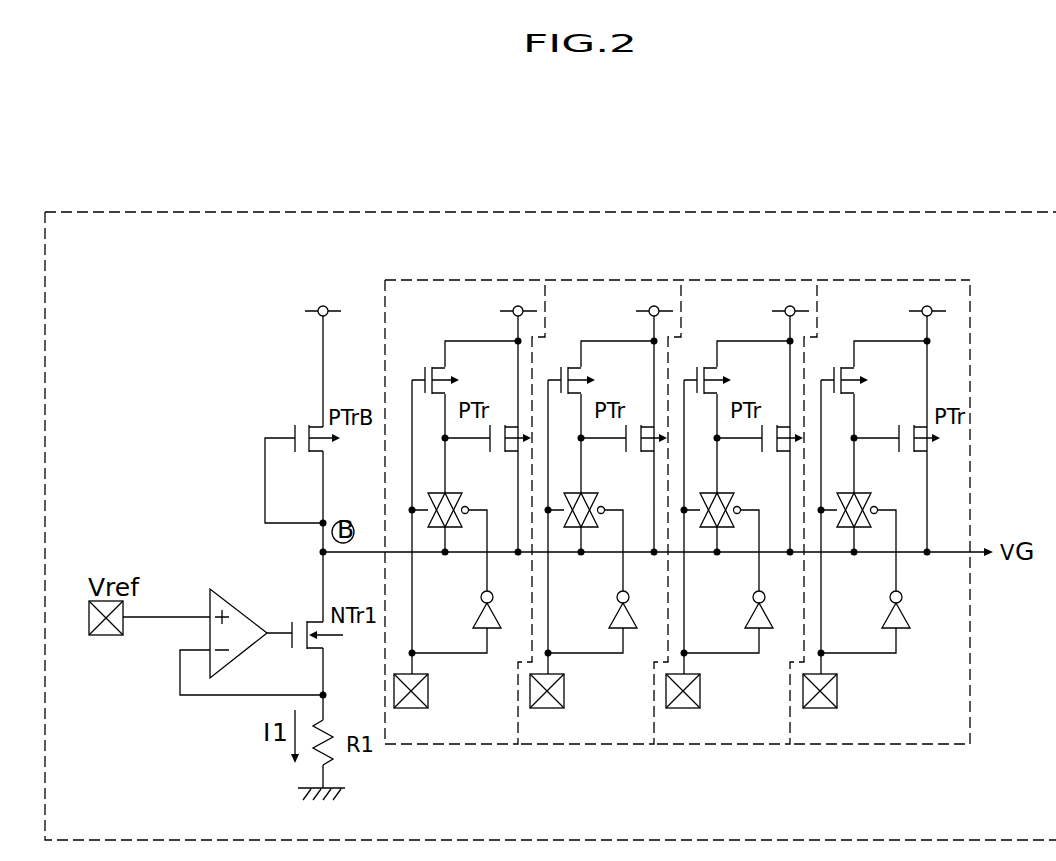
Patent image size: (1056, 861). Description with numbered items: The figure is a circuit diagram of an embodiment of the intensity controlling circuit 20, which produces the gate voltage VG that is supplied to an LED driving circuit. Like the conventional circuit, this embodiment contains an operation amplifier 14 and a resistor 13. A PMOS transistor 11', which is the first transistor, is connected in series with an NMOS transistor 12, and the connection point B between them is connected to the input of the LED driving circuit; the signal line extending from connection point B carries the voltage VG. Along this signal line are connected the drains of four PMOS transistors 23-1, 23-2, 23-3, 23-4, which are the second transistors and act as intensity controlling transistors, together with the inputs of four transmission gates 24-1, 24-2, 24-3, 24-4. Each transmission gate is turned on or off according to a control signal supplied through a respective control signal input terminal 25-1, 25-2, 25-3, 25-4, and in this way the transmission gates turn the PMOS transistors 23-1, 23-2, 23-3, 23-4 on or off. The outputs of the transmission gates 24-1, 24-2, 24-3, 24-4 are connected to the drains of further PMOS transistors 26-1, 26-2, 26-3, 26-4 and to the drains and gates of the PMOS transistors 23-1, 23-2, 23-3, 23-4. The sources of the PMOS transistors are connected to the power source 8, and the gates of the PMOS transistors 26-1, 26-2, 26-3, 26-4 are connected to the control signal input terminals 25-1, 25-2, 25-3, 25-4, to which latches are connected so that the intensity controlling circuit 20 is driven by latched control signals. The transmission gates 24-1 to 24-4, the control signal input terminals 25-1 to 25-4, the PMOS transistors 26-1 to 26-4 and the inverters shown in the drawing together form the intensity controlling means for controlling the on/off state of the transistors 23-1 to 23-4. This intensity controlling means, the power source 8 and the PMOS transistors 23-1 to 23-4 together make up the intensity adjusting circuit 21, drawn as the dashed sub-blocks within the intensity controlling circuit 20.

The intensity controlling circuit 20 is at (252, 213).
The intensity adjusting circuit 21 is at (892, 278).
The power source 8 is at (317, 307).
The PMOS transistor 11' is at (301, 404).
The NMOS transistor 12 is at (325, 647).
The resistor 13 is at (317, 764).
The operation amplifier 14 is at (210, 590).
The PMOS transistor 26-1 is at (428, 365).
The PMOS transistor 26-2 is at (564, 365).
The PMOS transistor 26-3 is at (700, 365).
The PMOS transistor 26-4 is at (837, 365).
The PMOS transistor 23-1 is at (496, 454).
The PMOS transistor 23-2 is at (632, 454).
The PMOS transistor 23-3 is at (768, 454).
The PMOS transistor 23-4 is at (905, 454).
The transmission gate 24-1 is at (440, 529).
The transmission gate 24-2 is at (576, 529).
The transmission gate 24-3 is at (712, 529).
The transmission gate 24-4 is at (849, 529).
The control signal input terminal 25-1 is at (428, 708).
The control signal input terminal 25-2 is at (564, 708).
The control signal input terminal 25-3 is at (700, 708).
The control signal input terminal 25-4 is at (837, 708).